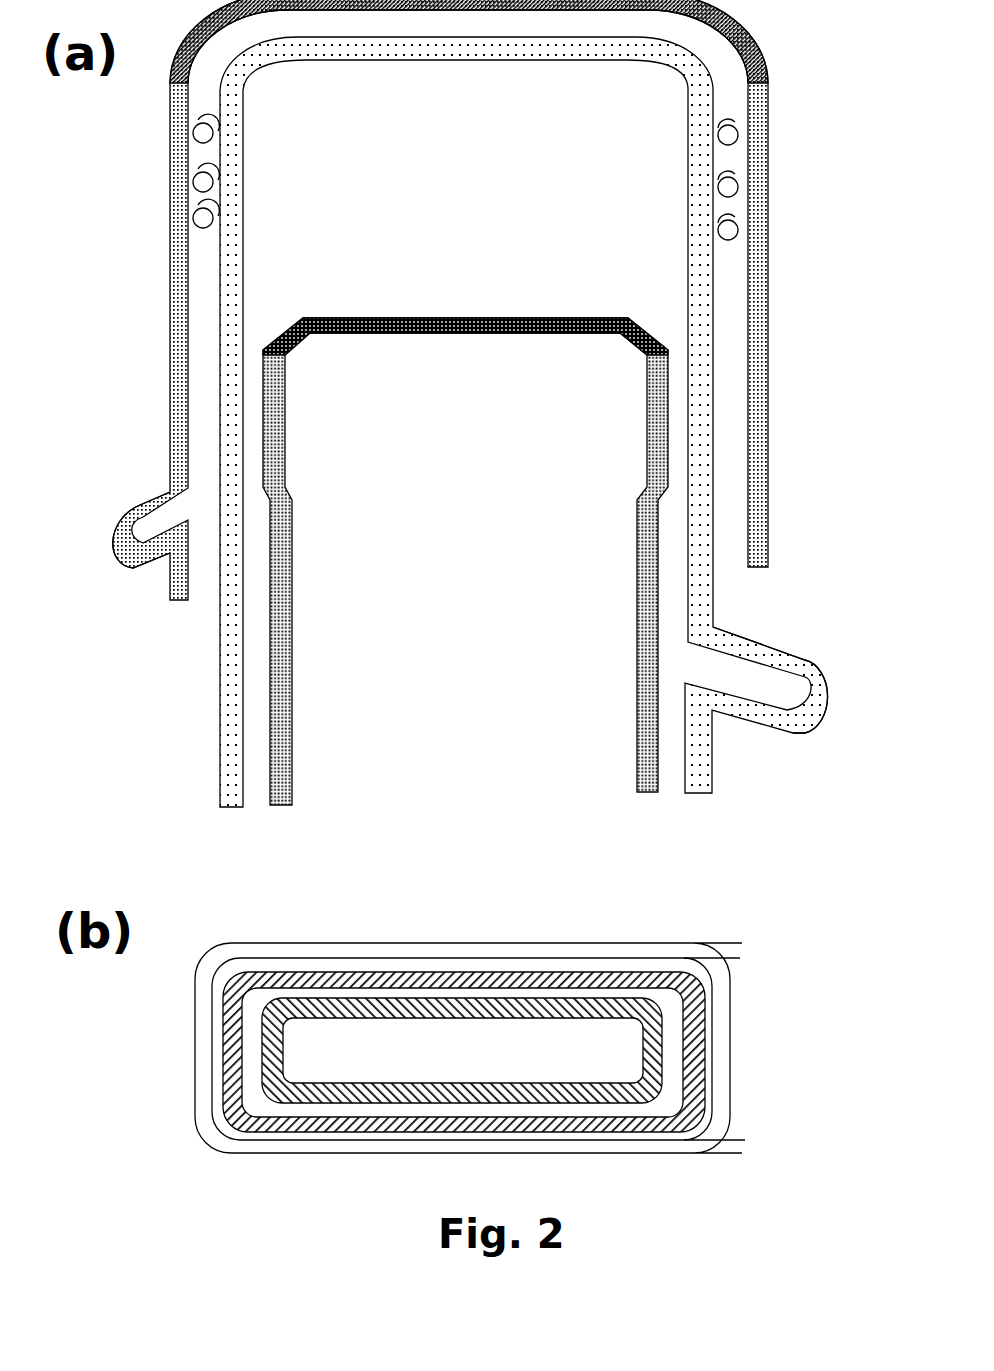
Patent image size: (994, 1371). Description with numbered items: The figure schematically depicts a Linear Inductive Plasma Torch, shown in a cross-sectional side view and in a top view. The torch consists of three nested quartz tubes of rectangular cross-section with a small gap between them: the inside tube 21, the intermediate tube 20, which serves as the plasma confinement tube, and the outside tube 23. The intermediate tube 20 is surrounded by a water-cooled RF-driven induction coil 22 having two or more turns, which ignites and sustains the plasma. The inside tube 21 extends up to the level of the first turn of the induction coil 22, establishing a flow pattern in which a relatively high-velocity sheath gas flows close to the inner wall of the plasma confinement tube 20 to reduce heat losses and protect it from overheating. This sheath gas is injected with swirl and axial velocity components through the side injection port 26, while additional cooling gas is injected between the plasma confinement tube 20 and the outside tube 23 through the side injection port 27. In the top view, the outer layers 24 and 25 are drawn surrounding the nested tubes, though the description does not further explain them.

In FIG. 2a, the intermediate tube 20 is at (236, 270).
In FIG. 2b, the intermediate tube 20 is at (423, 972).
In FIG. 2a, the inside tube 21 is at (638, 548).
In FIG. 2b, the inside tube 21 is at (362, 1008).
In FIG. 2a, the induction coil 22 is at (205, 133).
In FIG. 2b, the induction coil 22 is at (202, 1062).
In FIG. 2a, the outside tube 23 is at (178, 328).
In FIG. 2b, the upper outer layer 24 is at (740, 945).
In FIG. 2b, the lower outer layer 25 is at (738, 1155).
In FIG. 2a, the side injection port 26 is at (793, 700).
In FIG. 2a, the side injection port 27 is at (142, 537).